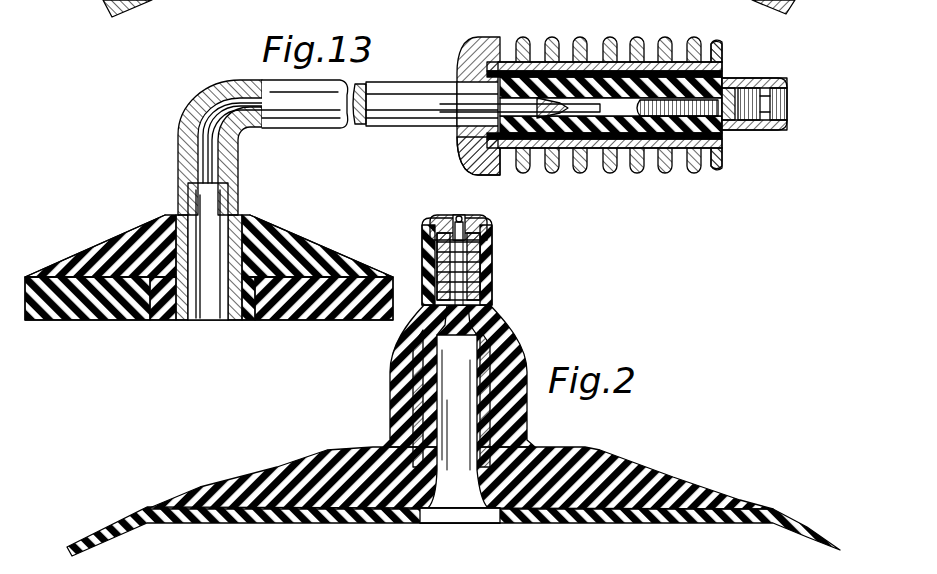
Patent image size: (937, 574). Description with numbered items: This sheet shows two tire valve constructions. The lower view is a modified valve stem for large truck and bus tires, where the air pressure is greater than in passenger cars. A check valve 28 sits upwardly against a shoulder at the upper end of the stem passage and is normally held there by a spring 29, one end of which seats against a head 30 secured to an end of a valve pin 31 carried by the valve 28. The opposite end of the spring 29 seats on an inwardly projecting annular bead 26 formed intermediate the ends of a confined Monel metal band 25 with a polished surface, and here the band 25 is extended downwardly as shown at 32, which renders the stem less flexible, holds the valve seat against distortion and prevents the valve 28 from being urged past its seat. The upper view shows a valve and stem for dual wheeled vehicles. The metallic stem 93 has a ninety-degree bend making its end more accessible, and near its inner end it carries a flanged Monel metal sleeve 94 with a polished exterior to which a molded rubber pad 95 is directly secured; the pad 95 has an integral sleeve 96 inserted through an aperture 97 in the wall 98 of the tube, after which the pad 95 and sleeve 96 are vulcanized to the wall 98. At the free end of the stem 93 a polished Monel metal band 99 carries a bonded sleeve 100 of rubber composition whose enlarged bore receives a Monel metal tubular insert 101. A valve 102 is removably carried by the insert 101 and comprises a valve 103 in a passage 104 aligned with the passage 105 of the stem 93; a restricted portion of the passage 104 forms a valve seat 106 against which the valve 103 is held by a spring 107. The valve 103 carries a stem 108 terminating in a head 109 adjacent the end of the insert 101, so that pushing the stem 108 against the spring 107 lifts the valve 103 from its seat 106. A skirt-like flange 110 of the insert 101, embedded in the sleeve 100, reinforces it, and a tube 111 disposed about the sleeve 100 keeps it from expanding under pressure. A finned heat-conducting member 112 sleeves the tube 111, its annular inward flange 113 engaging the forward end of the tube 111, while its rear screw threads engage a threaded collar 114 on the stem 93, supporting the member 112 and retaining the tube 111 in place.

In FIG. 13, the stem 93 is at (180, 125).
In FIG. 13, the flanged Monel metal sleeve 94 is at (238, 322).
In FIG. 13, the rubber pad 95 is at (106, 252).
In FIG. 13, the integral sleeve 96 is at (170, 321).
In FIG. 13, the aperture 97 is at (252, 324).
In FIG. 13, the wall of the tube 98 is at (90, 321).
In FIG. 13, the Monel metal band 99 is at (509, 60).
In FIG. 13, the sleeve of rubber composition 100 is at (561, 62).
In FIG. 13, the Monel metal tubular insert 101 is at (726, 80).
In FIG. 13, the valve 102 is at (722, 128).
In FIG. 13, the valve 103 is at (550, 150).
In FIG. 13, the passage 104 is at (536, 62).
In FIG. 13, the passage of the valve stem 105 is at (456, 82).
In FIG. 13, the valve seat 106 is at (575, 118).
In FIG. 13, the spring 107 is at (676, 116).
In FIG. 13, the stem 108 is at (622, 108).
In FIG. 13, the head 109 is at (788, 101).
In FIG. 13, the skirt-like flange 110 is at (598, 75).
In FIG. 13, the tube 111 is at (649, 70).
In FIG. 13, the finned heat-conducting member 112 is at (724, 150).
In FIG. 13, the annular inwardly disposed flange 113 is at (727, 60).
In FIG. 13, the threaded collar 114 is at (465, 141).
In FIG. 2, the band 25 is at (493, 258).
In FIG. 2, the annular bead 26 is at (494, 298).
In FIG. 2, the check valve 28 is at (388, 348).
In FIG. 2, the spring 29 is at (426, 265).
In FIG. 2, the head 30 is at (478, 220).
In FIG. 2, the valve pin 31 is at (458, 213).
In FIG. 2, the extension 32 is at (404, 402).